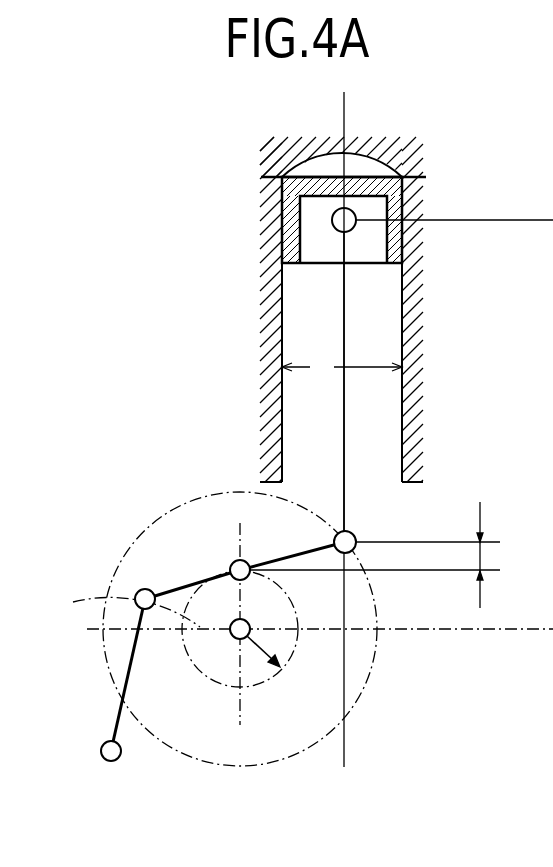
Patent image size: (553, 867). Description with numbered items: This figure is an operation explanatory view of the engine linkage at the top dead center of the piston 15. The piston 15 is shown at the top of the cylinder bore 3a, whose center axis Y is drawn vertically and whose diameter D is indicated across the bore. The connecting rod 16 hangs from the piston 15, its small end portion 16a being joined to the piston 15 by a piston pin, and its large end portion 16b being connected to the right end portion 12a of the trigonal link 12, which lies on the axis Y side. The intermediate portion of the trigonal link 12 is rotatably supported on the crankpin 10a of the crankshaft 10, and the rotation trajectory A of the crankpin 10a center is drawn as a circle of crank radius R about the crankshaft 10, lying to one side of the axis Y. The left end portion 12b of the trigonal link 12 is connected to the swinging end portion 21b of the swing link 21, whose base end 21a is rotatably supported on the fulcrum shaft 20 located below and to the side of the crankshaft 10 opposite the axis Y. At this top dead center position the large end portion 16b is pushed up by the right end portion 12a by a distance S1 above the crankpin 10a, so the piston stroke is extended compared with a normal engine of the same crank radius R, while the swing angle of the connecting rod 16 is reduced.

The piston 15 is at (409, 149).
The cylinder bore 3a is at (402, 333).
The connecting rod 16 is at (344, 405).
The small end portion 16a is at (332, 220).
The large end portion 16b is at (417, 527).
The right end portion 12a is at (353, 534).
The trigonal link 12 is at (188, 584).
The crankshaft 10 is at (233, 637).
The crankpin 10a is at (233, 563).
The left end portion 12b is at (106, 557).
The swinging end portion 21b is at (138, 591).
The swing link 21 is at (128, 667).
The fulcrum shaft 20 is at (141, 773).
The base end 21a is at (118, 758).
The axis of the cylinder bore Y is at (345, 106).
The diameter of the cylinder bore D is at (342, 367).
The distance S1 is at (481, 556).
The crank radius R is at (256, 648).
The rotation trajectory A is at (292, 650).